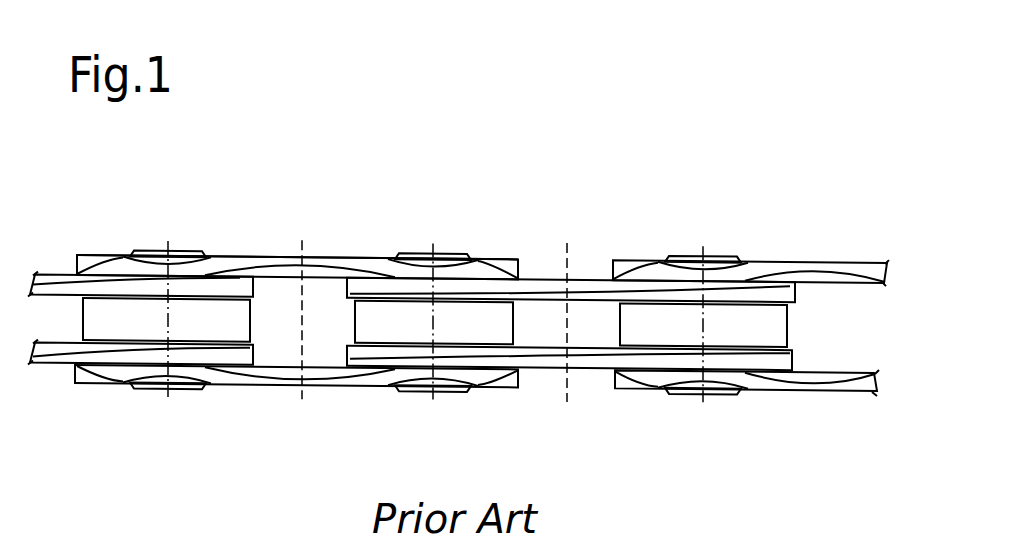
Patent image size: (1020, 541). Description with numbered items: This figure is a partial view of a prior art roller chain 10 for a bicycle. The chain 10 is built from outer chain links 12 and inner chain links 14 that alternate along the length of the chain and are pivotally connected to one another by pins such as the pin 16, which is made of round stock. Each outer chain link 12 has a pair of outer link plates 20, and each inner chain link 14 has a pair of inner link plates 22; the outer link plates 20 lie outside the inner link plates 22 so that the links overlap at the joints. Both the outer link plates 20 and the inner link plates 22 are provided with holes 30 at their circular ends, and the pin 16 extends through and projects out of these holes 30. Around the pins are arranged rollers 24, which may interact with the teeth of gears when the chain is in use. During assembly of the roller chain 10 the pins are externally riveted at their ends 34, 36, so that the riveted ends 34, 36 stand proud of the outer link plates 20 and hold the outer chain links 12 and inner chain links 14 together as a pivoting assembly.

The roller chain 10 is at (640, 186).
The outer chain link 12 is at (294, 398).
The inner chain link 14 is at (552, 386).
The pin 16 is at (443, 256).
The outer link plate 20 is at (363, 257).
The inner link plate 22 is at (590, 380).
The roller 24 is at (765, 325).
The hole 30 is at (210, 257).
The pin end 34 is at (467, 256).
The pin end 36 is at (397, 392).